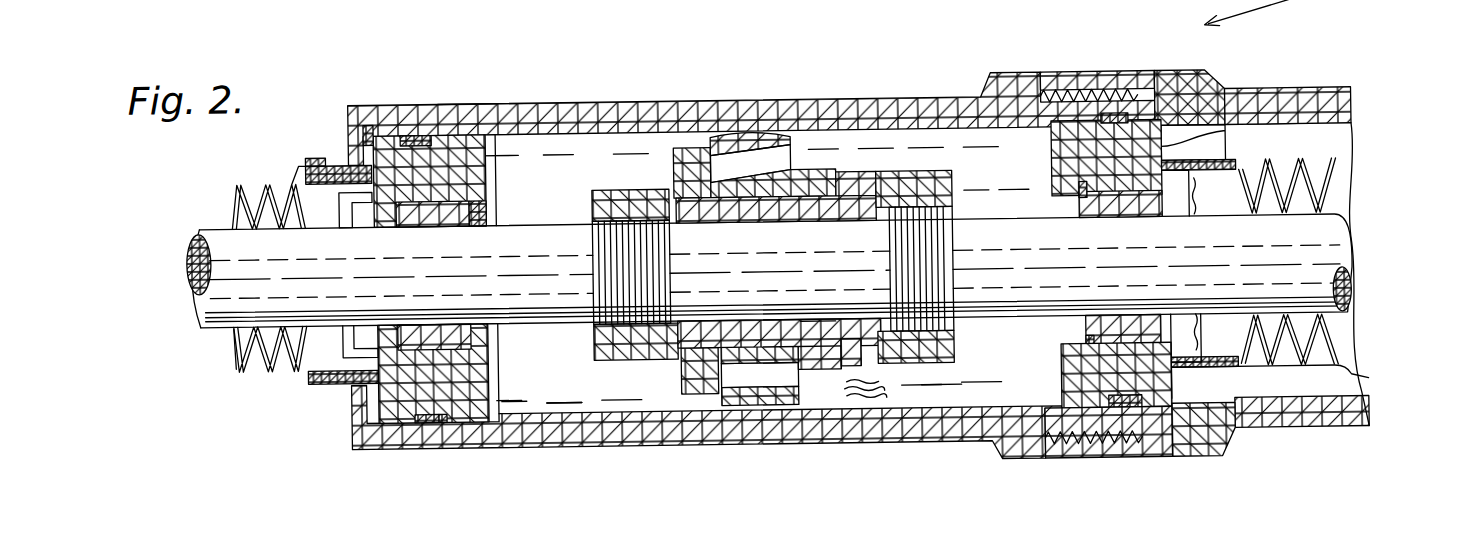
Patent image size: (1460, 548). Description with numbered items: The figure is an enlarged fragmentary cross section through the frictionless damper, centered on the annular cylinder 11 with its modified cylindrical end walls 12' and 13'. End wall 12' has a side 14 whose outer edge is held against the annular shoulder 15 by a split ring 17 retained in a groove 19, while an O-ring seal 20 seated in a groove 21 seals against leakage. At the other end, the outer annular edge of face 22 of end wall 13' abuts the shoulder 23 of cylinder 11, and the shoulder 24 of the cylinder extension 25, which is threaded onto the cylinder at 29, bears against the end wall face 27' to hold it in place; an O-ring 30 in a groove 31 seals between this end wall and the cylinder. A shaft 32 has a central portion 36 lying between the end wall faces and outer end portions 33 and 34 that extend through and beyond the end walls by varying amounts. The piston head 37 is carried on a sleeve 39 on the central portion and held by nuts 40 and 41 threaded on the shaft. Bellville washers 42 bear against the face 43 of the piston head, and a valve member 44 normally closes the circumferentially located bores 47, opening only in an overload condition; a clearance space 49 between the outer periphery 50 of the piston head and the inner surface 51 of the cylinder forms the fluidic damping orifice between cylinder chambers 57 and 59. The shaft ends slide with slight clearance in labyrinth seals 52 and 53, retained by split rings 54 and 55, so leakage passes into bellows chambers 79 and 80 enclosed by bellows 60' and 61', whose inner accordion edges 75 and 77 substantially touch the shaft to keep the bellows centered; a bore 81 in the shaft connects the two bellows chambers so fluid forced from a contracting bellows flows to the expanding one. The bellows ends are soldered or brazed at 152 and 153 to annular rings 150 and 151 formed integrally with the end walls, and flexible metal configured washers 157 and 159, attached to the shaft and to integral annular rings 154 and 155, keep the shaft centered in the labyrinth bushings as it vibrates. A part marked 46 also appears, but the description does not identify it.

The annular cylinder 11 is at (852, 100).
The cylindrical end wall 12' is at (467, 89).
The cylindrical end wall 13' is at (1097, 58).
The side 14 is at (545, 150).
The annular shoulder 15 is at (492, 166).
The split ring 17 is at (370, 120).
The groove 19 is at (355, 428).
The O-ring seal 20 is at (412, 418).
The groove 21 is at (434, 418).
The face 22 is at (1053, 160).
The shoulder 23 is at (1082, 455).
The shoulder 24 is at (1198, 90).
The cylinder extension 25 is at (1356, 106).
The end wall face 27' is at (1229, 103).
The threaded connection 29 is at (1120, 94).
The O-ring 30 is at (1115, 448).
The groove 31 is at (1132, 448).
The shaft 32 is at (548, 312).
The outer end portion 33 is at (192, 244).
The outer end portion 34 is at (1352, 302).
The central portion 36 is at (1018, 212).
The piston head 37 is at (770, 137).
The sleeve 39 is at (775, 216).
The nut 40 is at (612, 358).
The nut 41 is at (955, 355).
The Bellville washers 42 is at (860, 392).
The face 43 is at (815, 320).
The valve member 44 is at (680, 392).
The bearing cone 46 is at (715, 395).
The bores 47 is at (790, 150).
The clearance space 49 is at (780, 400).
The outer periphery 50 is at (760, 408).
The inner surface 51 is at (545, 410).
The labyrinth seal 52 is at (493, 368).
The labyrinth seal 53 is at (1065, 393).
The split ring 54 is at (490, 213).
The split ring 55 is at (1062, 337).
The cylinder chamber 57 is at (580, 405).
The cylinder chamber 59 is at (950, 402).
The bellows 60' is at (249, 371).
The bellows 61' is at (1299, 381).
The inner accordion edge 75 is at (254, 222).
The inner accordion edge 77 is at (1305, 222).
The bellows chamber 79 is at (234, 352).
The bellows chamber 80 is at (1340, 347).
The bore 81 is at (192, 264).
The annular ring 150 is at (340, 160).
The annular ring 151 is at (1288, 100).
The soldered joint 152 is at (305, 158).
The soldered joint 153 is at (1238, 168).
The annular ring 154 is at (375, 222).
The annular ring 155 is at (1160, 218).
The flexible metal configured washer 157 is at (338, 220).
The flexible metal configured washer 159 is at (1200, 218).